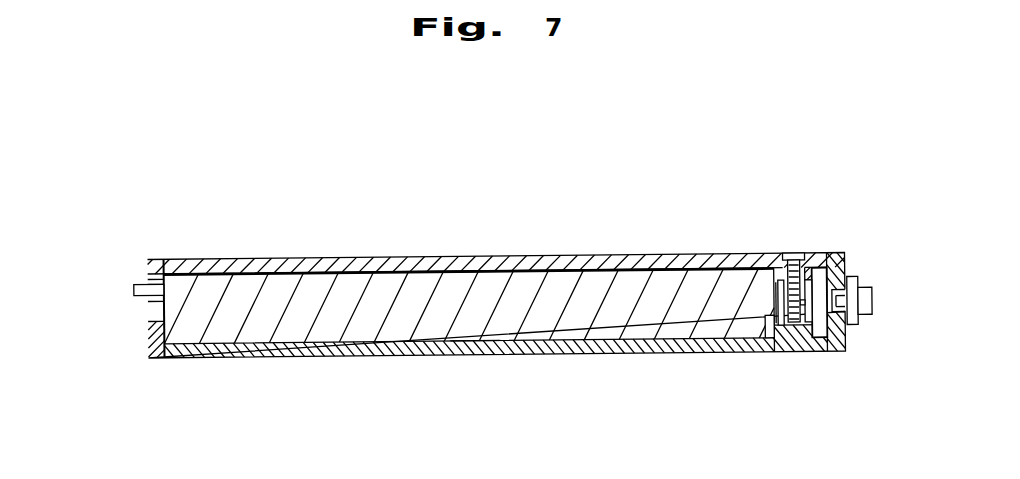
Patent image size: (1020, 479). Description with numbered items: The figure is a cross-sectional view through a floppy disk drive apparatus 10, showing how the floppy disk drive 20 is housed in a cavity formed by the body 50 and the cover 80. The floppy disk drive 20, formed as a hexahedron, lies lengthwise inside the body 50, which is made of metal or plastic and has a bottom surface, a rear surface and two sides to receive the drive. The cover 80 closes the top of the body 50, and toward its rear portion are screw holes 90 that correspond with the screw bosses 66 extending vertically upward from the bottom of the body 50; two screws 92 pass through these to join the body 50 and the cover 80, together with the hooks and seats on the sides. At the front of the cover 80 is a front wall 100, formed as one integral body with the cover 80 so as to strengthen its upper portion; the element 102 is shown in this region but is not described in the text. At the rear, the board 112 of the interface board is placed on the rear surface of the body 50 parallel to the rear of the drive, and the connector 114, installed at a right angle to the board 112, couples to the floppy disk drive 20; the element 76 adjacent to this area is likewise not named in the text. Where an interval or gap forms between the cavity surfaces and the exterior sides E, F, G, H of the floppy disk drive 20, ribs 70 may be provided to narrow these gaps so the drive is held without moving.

The floppy disk drive apparatus 10 is at (357, 148).
The floppy disk drive 20 is at (553, 285).
The body 50 is at (648, 351).
The screw bosses 66 is at (795, 327).
The ribs 70 is at (765, 332).
The external terminal 76 is at (870, 302).
The cover 80 is at (662, 262).
The screw holes 90 is at (783, 257).
The screws 92 is at (802, 270).
The front wall 100 is at (150, 347).
The insulator 102 is at (150, 312).
The board 112 is at (858, 287).
The connector 114 is at (820, 280).
The exterior side E is at (156, 276).
The exterior side F is at (775, 287).
The exterior side G is at (475, 268).
The exterior side H is at (475, 355).